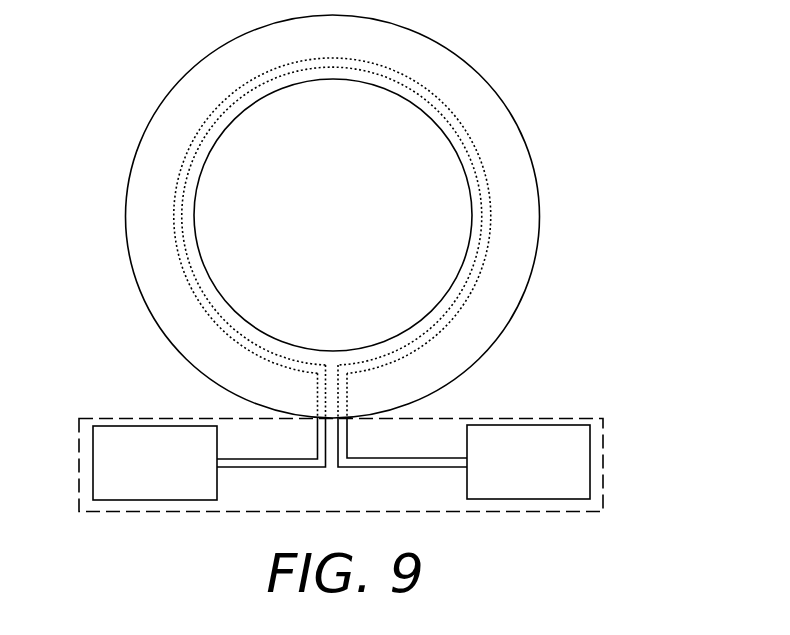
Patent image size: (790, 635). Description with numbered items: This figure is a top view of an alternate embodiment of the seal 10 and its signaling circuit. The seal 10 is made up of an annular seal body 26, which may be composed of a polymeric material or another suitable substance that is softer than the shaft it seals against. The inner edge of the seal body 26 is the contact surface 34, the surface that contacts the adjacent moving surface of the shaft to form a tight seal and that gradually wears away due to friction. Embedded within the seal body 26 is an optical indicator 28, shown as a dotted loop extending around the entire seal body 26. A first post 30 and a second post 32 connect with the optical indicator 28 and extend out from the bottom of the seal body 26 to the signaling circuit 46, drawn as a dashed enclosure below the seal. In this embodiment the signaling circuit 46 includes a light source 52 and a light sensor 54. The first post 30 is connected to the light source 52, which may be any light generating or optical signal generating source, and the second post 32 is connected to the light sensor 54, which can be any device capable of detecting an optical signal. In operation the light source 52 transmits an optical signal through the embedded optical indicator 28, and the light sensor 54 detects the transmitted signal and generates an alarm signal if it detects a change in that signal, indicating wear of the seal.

The seal 10 is at (546, 94).
The seal body 26 is at (518, 183).
The contact surface 34 is at (468, 240).
The embedded optical indicator 28 is at (476, 319).
The first post 30 is at (317, 388).
The second post 32 is at (347, 392).
The signaling circuit 46 is at (630, 455).
The light source 52 is at (143, 500).
The light sensor 54 is at (495, 499).